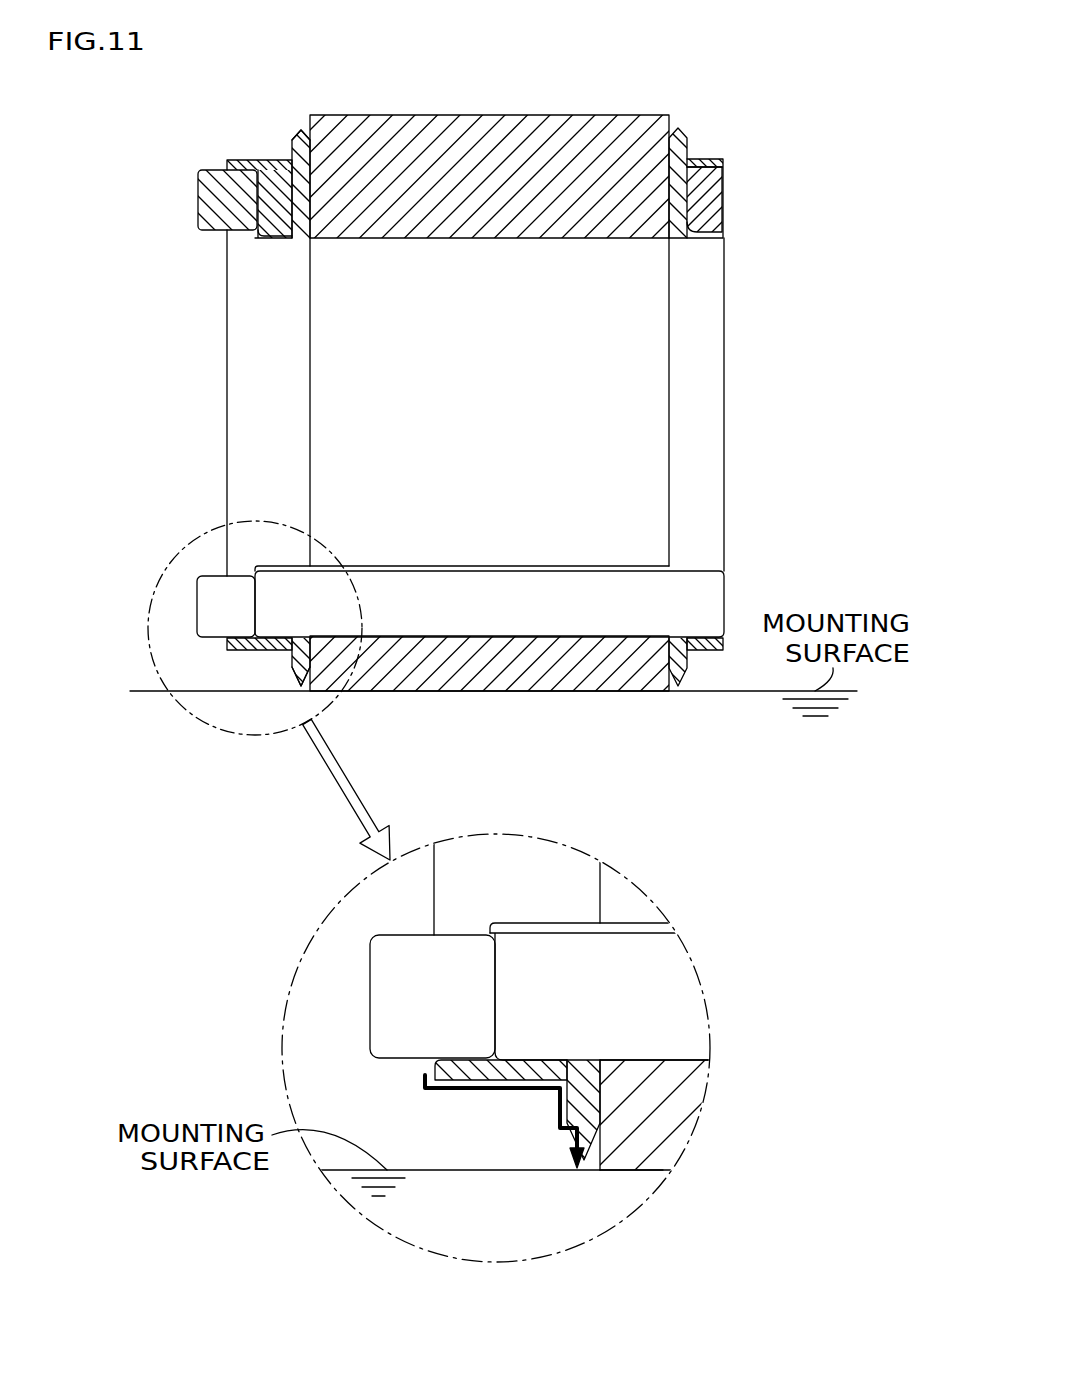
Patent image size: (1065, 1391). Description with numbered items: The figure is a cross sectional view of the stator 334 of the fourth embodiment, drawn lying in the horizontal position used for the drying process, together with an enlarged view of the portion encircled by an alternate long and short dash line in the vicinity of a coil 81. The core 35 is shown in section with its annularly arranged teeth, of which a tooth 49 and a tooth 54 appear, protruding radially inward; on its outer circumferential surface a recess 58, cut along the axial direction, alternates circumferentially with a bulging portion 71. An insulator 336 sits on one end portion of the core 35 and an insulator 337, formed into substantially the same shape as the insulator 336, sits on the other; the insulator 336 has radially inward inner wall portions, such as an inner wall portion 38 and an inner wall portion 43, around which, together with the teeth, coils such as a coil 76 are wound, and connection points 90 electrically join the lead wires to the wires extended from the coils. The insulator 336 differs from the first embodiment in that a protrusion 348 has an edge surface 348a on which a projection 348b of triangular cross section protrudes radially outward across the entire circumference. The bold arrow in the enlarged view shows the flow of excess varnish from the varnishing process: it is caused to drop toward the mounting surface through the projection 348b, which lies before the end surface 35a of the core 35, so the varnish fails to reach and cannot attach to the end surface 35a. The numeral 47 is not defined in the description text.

The stator 334 is at (150, 248).
The insulator 336 is at (233, 137).
The insulator 337 is at (706, 145).
The bracket 47 is at (257, 162).
The protrusion 348 is at (292, 146).
The edge surface 348a is at (296, 138).
The projection 348b is at (302, 132).
The core 35 is at (463, 102).
The end surface 35a is at (593, 1173).
The recess 58 is at (543, 114).
The tooth 49 is at (487, 230).
The connection point 90 is at (199, 199).
The coil 76 is at (713, 200).
The inner wall portion 38 is at (293, 238).
The coil 81 is at (270, 578).
The inner wall portion 43 is at (296, 567).
The tooth 54 is at (487, 570).
The bulging portion 71 is at (541, 695).